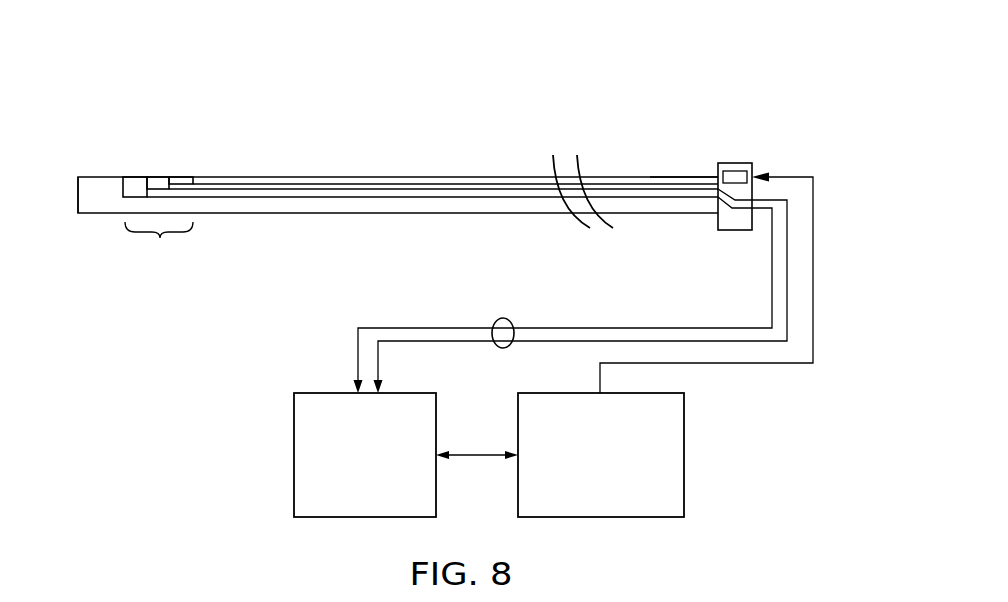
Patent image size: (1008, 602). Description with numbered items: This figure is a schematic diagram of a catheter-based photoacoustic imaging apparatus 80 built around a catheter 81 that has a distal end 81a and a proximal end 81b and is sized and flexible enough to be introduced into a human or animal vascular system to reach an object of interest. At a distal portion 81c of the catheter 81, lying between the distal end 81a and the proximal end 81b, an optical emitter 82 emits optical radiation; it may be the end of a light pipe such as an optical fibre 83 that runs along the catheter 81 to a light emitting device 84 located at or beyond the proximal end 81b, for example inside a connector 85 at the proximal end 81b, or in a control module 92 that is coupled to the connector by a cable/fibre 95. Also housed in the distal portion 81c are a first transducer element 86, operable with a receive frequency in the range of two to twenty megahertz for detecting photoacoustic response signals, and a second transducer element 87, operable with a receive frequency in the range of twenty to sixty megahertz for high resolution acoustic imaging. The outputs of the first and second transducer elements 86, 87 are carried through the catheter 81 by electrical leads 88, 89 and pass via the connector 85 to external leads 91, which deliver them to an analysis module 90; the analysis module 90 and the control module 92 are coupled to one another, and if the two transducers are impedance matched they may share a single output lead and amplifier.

The catheter-based imaging apparatus 80 is at (160, 104).
The catheter 81 is at (380, 177).
The distal end 81a is at (97, 177).
The proximal end 81b is at (703, 176).
The distal portion 81c is at (159, 248).
The optical emitter 82 is at (182, 182).
The optical fibre 83 is at (267, 182).
The light emitting device 84 is at (740, 163).
The connector 85 is at (735, 230).
The first transducer element 86 is at (135, 183).
The second transducer element 87 is at (155, 183).
The electrical lead 88 is at (290, 197).
The electrical lead 89 is at (357, 189).
The analysis module 90 is at (294, 457).
The external leads 91 is at (500, 317).
The control module 92 is at (687, 460).
The cable/fibre 95 is at (815, 276).